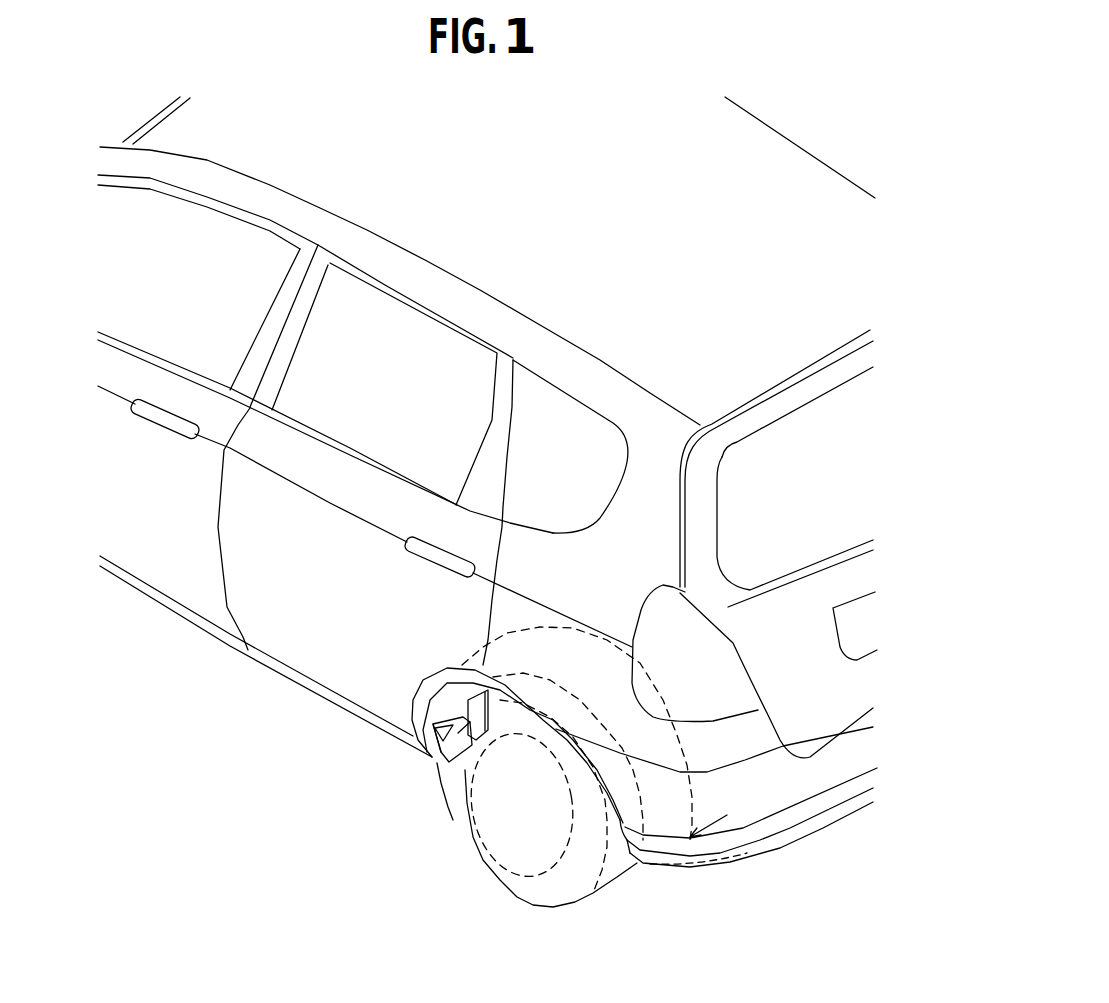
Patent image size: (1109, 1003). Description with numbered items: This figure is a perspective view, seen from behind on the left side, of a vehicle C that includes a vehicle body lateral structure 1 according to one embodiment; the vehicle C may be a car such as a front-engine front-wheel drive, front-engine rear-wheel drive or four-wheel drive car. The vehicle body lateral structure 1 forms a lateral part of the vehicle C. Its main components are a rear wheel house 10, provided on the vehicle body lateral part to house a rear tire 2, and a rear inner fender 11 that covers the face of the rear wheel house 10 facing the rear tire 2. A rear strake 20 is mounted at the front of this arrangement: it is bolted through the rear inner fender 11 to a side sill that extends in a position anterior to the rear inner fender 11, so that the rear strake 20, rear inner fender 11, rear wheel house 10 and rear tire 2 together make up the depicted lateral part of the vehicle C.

The vehicle C is at (576, 145).
The vehicle body lateral structure 1 is at (424, 792).
The rear inner fender 11 is at (417, 741).
The rear strake 20 is at (467, 762).
The rear wheel house 10 is at (510, 797).
The rear tire 2 is at (553, 900).